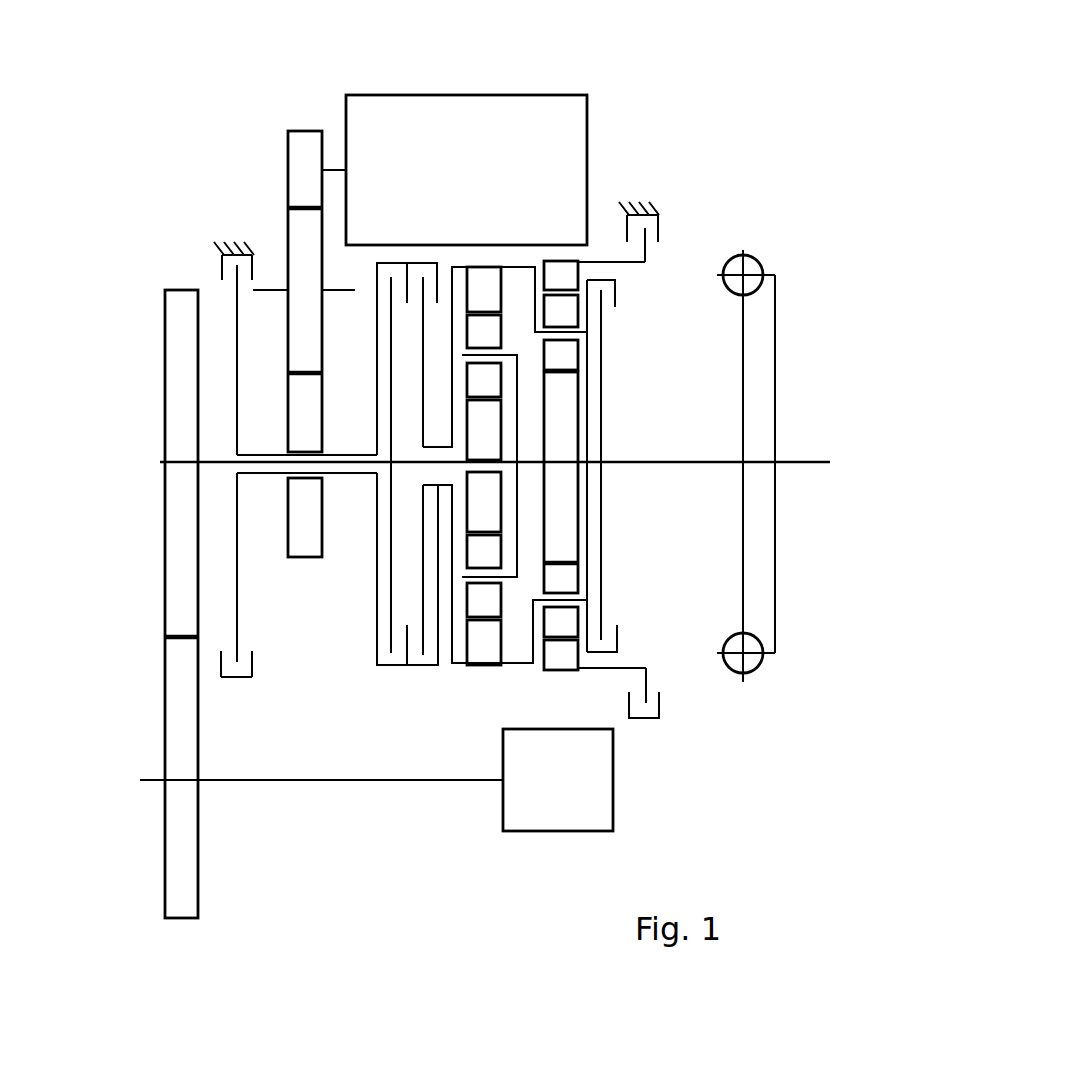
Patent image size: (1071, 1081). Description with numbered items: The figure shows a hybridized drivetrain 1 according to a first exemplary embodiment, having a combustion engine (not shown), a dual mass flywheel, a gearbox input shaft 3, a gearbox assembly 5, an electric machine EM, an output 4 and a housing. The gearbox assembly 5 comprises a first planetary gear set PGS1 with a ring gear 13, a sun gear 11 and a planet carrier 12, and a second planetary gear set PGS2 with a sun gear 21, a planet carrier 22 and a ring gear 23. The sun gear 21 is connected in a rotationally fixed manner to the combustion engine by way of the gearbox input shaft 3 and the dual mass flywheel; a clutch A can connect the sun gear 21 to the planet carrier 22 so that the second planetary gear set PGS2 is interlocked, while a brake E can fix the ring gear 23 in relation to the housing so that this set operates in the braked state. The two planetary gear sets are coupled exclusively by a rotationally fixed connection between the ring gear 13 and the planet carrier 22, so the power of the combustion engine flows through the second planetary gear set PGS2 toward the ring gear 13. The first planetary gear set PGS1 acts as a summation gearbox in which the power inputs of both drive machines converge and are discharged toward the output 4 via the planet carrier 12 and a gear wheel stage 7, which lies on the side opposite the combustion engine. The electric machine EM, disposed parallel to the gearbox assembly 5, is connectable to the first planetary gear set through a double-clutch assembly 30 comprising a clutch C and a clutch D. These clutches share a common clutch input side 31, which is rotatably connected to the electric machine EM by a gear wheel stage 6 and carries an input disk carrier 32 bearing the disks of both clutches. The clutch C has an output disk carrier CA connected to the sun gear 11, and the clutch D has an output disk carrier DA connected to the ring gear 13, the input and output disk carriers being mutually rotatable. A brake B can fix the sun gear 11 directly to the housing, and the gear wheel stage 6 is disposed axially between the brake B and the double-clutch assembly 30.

The hybridized drivetrain 1 is at (725, 125).
The gearbox input shaft 3 is at (813, 466).
The output 4 is at (585, 795).
The gearbox assembly 5 is at (735, 208).
The gear wheel stage 6 is at (302, 246).
The gear wheel stage 7 is at (187, 607).
The sun gear 11 is at (485, 503).
The planet carrier 12 is at (517, 576).
The ring gear 13 is at (480, 290).
The sun gear 21 is at (558, 447).
The planet carrier 22 is at (587, 334).
The ring gear 23 is at (562, 275).
The double-clutch assembly 30 is at (353, 412).
The common clutch input side 31 is at (377, 350).
The input disk carrier 32 is at (407, 265).
The output disk carrier DA is at (428, 424).
The output disk carrier CA is at (395, 493).
The electric machine EM is at (454, 170).
The clutch A is at (610, 464).
The brake B is at (295, 439).
The clutch C is at (393, 683).
The clutch D is at (425, 683).
The brake E is at (627, 693).
The first planetary gear set PGS1 is at (481, 508).
The second planetary gear set PGS2 is at (556, 498).